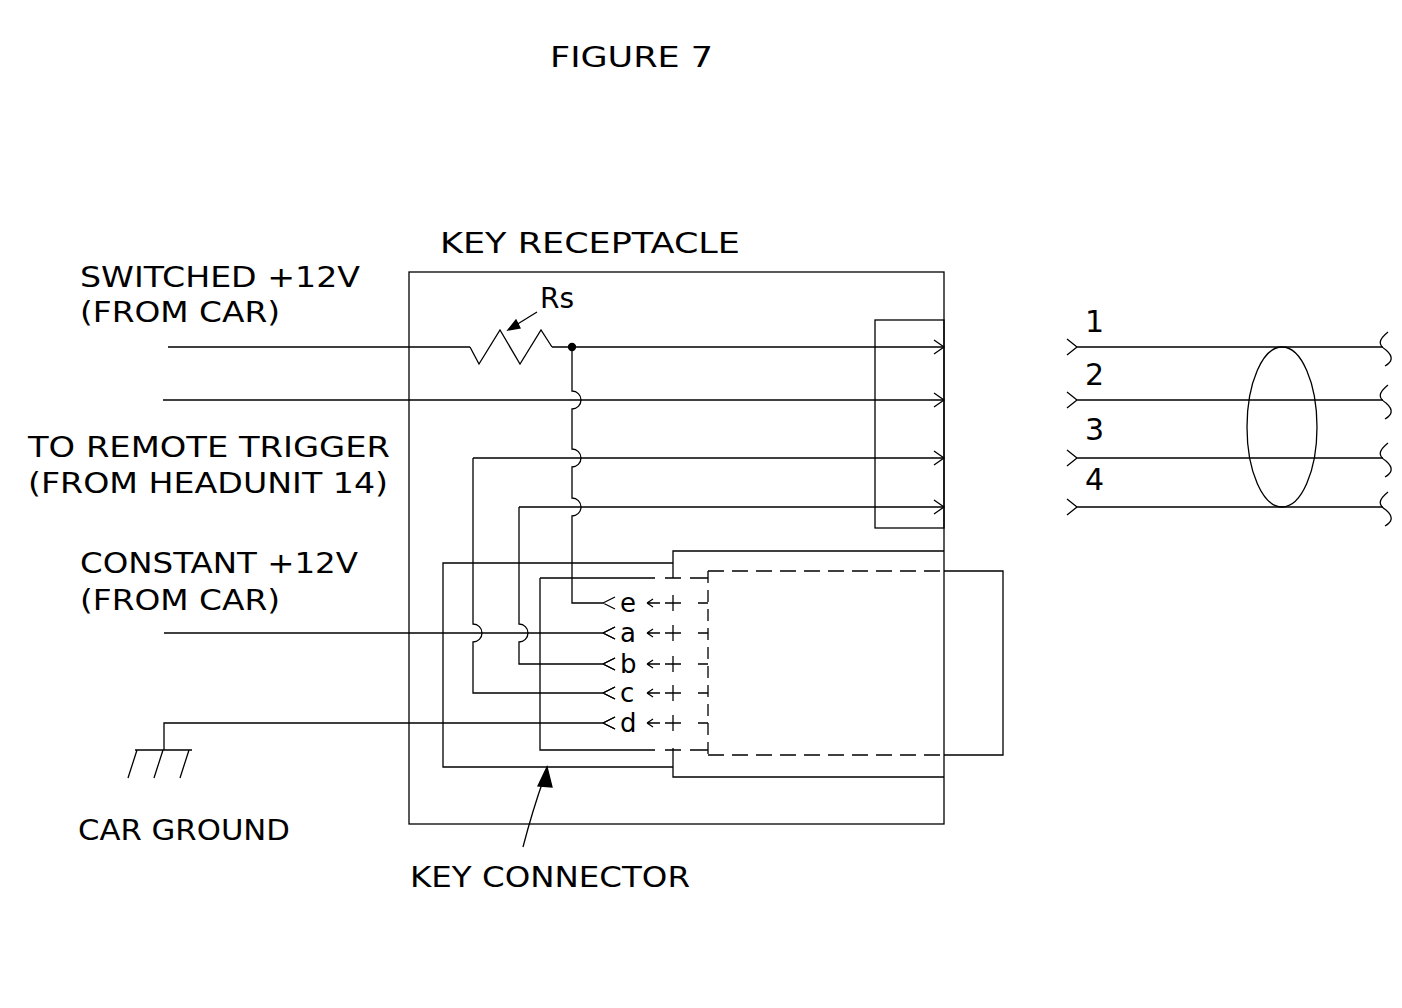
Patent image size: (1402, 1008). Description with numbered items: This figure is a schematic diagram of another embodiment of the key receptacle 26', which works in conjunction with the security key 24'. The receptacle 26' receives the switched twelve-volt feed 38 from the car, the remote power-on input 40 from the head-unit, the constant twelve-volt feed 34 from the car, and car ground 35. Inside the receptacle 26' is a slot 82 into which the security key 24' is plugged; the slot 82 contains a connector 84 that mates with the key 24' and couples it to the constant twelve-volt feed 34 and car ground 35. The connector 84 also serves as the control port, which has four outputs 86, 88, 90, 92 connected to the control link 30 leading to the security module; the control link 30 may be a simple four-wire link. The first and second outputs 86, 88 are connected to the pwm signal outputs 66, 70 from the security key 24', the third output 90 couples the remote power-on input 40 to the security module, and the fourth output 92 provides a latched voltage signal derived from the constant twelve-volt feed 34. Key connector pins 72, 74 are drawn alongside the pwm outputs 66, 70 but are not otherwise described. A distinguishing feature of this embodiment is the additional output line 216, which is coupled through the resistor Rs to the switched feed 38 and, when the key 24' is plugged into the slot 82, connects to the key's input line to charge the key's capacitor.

The key receptacle 26' is at (714, 496).
The connector 84 is at (941, 312).
The fourth output 92 is at (958, 350).
The third output 90 is at (958, 403).
The second output 88 is at (958, 460).
The first output 86 is at (958, 510).
The control link 30 is at (1249, 370).
The switched 12-volt feed 38 is at (165, 350).
The remote power-on input 40 is at (291, 392).
The output line 216 is at (553, 435).
The constant 12-volt feed 34 is at (262, 643).
The car ground 35 is at (301, 716).
The key connector pin a 72 is at (595, 641).
The pwm signal output 66 is at (595, 671).
The pwm signal output 70 is at (595, 701).
The key connector pin d 74 is at (595, 730).
The slot 82 is at (918, 787).
The security key 24' is at (899, 663).